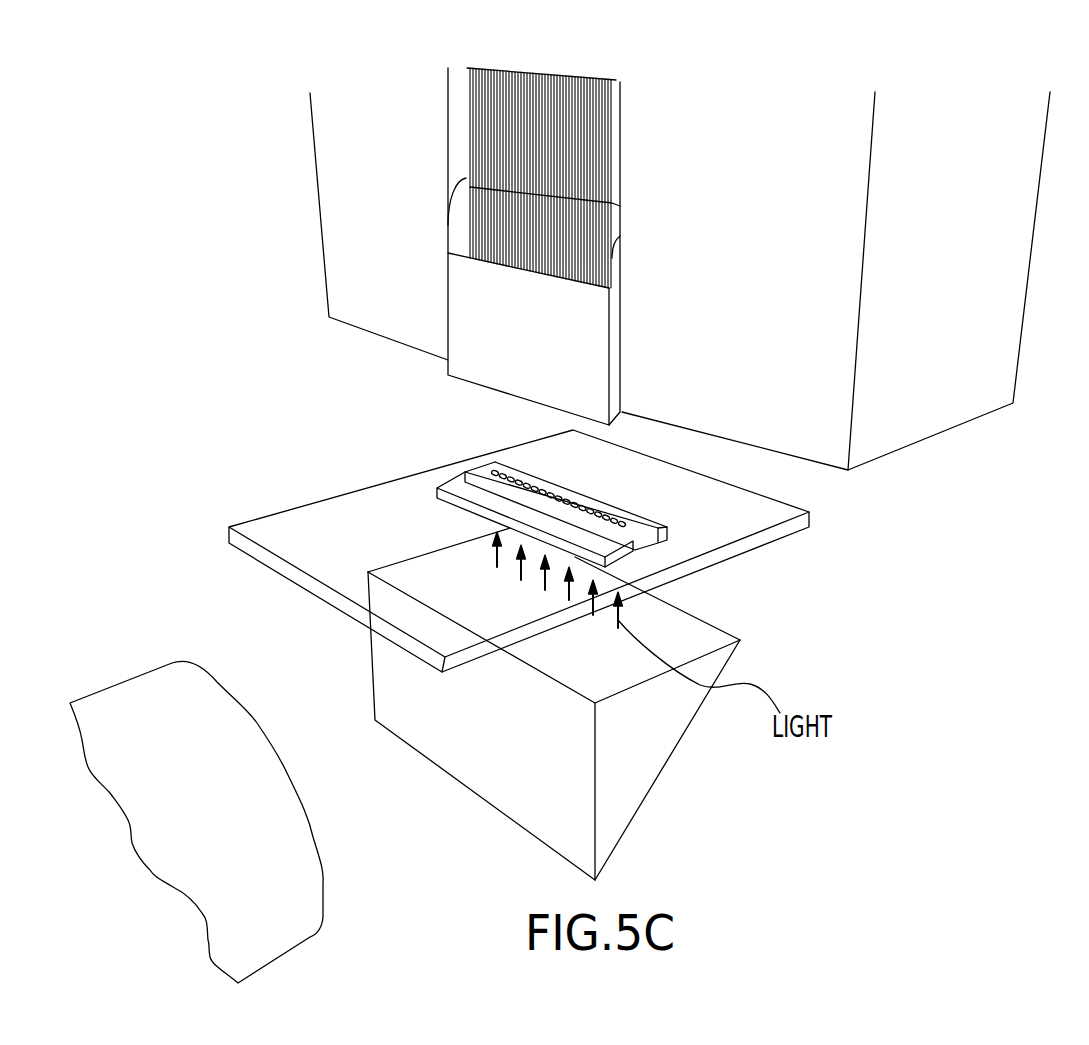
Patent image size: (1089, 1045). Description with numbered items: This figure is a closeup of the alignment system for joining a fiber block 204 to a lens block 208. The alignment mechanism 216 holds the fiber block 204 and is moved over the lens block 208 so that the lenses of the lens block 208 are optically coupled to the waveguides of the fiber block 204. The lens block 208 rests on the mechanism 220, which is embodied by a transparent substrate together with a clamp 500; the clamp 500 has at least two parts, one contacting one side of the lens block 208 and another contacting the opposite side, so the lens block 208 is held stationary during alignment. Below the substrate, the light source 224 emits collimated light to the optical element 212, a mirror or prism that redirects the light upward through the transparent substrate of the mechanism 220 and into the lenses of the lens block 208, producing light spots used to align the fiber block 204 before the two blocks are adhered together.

The fiber block 204 is at (585, 327).
The alignment mechanism 216 is at (970, 400).
The mechanism 220 is at (787, 533).
The clamp 500 is at (551, 499).
The lens block 208 is at (647, 542).
The optical element 212 is at (643, 770).
The light source 224 is at (290, 857).